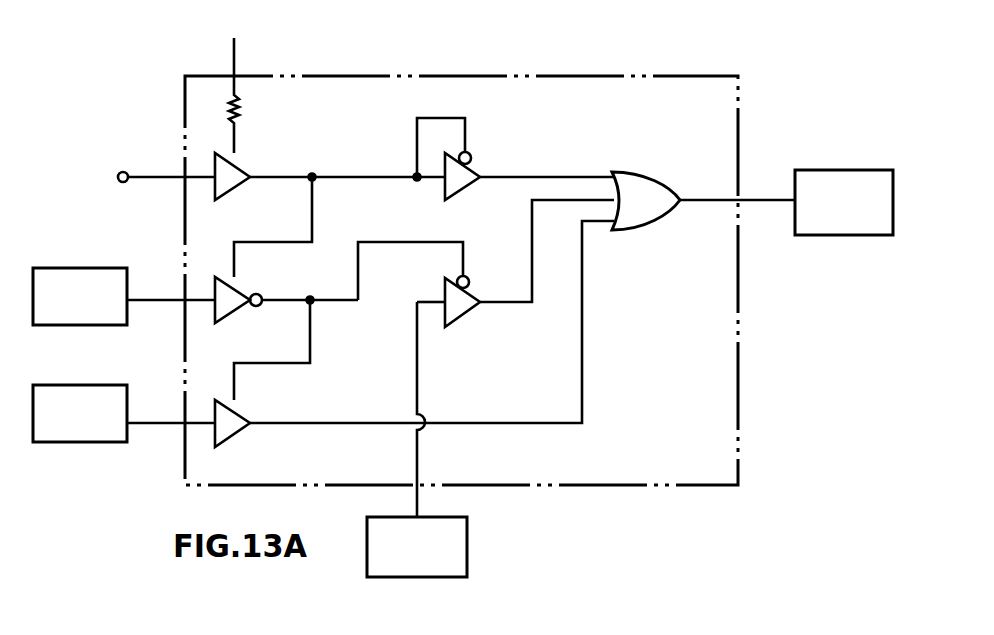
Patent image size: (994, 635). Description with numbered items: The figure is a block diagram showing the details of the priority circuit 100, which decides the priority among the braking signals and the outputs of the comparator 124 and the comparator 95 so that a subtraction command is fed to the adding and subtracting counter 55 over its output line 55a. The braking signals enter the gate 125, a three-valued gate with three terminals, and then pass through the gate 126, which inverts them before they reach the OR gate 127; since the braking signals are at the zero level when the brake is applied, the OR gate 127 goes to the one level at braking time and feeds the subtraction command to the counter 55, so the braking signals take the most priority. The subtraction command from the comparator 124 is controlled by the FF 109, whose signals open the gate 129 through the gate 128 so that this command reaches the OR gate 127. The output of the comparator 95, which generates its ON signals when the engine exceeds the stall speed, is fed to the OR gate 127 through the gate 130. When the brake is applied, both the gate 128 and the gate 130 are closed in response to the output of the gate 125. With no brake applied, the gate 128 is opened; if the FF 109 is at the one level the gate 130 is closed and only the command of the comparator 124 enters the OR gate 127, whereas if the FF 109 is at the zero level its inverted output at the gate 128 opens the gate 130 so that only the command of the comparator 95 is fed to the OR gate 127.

The priority circuit 100 is at (575, 76).
The gate 125 is at (240, 170).
The gate 126 is at (472, 168).
The OR gate 127 is at (650, 172).
The gate 128 is at (243, 293).
The gate 129 is at (472, 292).
The gate 130 is at (245, 413).
The FF 109 is at (70, 268).
The comparator 95 is at (74, 385).
The comparator 124 is at (467, 548).
The adding and subtracting counter 55 is at (832, 170).
The output line of gating circuit 55a is at (784, 200).